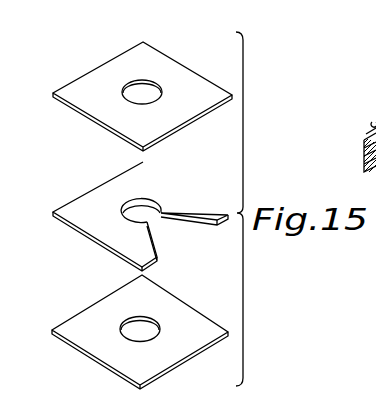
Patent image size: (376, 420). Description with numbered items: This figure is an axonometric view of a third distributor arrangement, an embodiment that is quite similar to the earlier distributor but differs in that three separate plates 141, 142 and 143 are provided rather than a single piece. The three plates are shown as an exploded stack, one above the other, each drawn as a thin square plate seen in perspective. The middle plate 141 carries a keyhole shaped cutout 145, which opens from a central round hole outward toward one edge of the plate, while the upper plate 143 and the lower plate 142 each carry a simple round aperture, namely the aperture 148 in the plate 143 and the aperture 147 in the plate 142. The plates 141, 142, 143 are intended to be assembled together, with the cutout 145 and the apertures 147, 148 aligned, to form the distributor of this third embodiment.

The plate 141 is at (100, 203).
The plate 142 is at (90, 331).
The plate 143 is at (95, 80).
The keyhole shaped cutout 145 is at (163, 228).
The aperture 147 is at (133, 333).
The aperture 148 is at (145, 90).